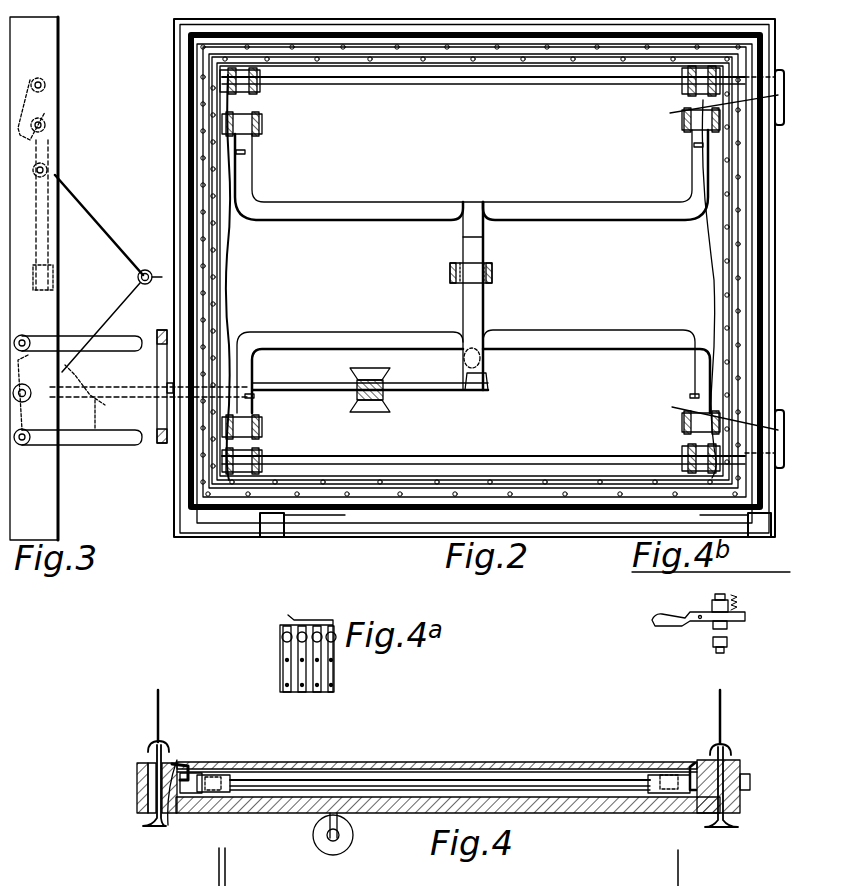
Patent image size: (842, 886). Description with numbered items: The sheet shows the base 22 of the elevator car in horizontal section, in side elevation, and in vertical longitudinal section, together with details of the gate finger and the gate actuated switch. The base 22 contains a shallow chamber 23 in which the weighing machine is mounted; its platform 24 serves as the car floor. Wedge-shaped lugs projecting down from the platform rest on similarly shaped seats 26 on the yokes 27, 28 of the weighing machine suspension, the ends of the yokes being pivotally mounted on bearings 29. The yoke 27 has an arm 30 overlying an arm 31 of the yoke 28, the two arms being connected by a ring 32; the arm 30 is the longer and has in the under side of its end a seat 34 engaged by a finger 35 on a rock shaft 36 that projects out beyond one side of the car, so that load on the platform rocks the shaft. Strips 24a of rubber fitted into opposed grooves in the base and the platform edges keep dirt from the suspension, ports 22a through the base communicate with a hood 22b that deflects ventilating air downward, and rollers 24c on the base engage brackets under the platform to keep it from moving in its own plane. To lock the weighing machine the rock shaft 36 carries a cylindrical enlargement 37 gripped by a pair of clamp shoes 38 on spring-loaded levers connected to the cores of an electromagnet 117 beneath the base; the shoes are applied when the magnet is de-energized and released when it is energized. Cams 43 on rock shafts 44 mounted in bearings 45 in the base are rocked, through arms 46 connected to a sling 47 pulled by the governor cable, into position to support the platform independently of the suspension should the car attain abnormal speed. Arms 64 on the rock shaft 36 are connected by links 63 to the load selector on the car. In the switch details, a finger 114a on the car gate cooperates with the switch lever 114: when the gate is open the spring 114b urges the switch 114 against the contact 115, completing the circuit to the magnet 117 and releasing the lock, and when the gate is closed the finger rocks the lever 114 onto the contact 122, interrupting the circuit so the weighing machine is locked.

In FIG. 2, the base 22 is at (170, 99).
In FIG. 3, the base 22 is at (55, 508).
In FIG. 4, the base 22 is at (558, 806).
In FIG. 4, the ports 22a is at (148, 806).
In FIG. 4, the hood 22b is at (148, 754).
In FIG. 4, the shallow chamber 23 is at (376, 767).
In FIG. 4, the platform 24 is at (488, 762).
In FIG. 4, the strips 24a is at (178, 766).
In FIG. 4, the rollers 24c is at (170, 825).
In FIG. 2, the seats 26 is at (245, 152).
In FIG. 2, the yoke 27 is at (318, 211).
In FIG. 3, the yoke 27 is at (50, 151).
In FIG. 2, the yoke 28 is at (308, 340).
In FIG. 3, the yoke 28 is at (150, 397).
In FIG. 2, the bearings 29 is at (262, 122).
In FIG. 2, the arm 30 is at (475, 306).
In FIG. 2, the arm 31 is at (468, 238).
In FIG. 2, the ring 32 is at (492, 272).
In FIG. 3, the ring 32 is at (53, 274).
In FIG. 2, the seat 34 is at (482, 360).
In FIG. 2, the finger 35 is at (490, 384).
In FIG. 2, the rock shaft 36 is at (420, 388).
In FIG. 2, the cylindrical enlargement 37 is at (383, 381).
In FIG. 2, the clamp shoes 38 is at (350, 375).
In FIG. 2, the cams 43 is at (250, 92).
In FIG. 2, the rock shafts 44 is at (488, 85).
In FIG. 3, the rock shafts 44 is at (45, 81).
In FIG. 4, the rock shafts 44 is at (573, 780).
In FIG. 2, the bearings 45 is at (260, 456).
In FIG. 2, the arms 46 is at (708, 264).
In FIG. 3, the arms 46 is at (40, 111).
In FIG. 3, the sling 47 is at (100, 223).
In FIG. 3, the links 63 is at (103, 352).
In FIG. 3, the arms 64 is at (30, 356).
In FIG. 4B, the switch 114 is at (668, 623).
In FIG. 4A, the finger 114a is at (298, 618).
In FIG. 4B, the spring 114b is at (737, 601).
In FIG. 4B, the contact 115 is at (712, 604).
In FIG. 4, the electromagnet 117 is at (345, 846).
In FIG. 4B, the contact 122 is at (727, 653).